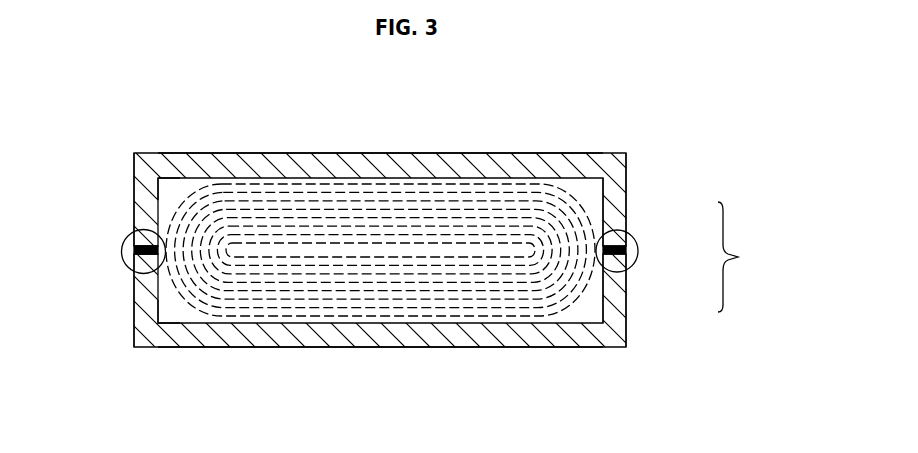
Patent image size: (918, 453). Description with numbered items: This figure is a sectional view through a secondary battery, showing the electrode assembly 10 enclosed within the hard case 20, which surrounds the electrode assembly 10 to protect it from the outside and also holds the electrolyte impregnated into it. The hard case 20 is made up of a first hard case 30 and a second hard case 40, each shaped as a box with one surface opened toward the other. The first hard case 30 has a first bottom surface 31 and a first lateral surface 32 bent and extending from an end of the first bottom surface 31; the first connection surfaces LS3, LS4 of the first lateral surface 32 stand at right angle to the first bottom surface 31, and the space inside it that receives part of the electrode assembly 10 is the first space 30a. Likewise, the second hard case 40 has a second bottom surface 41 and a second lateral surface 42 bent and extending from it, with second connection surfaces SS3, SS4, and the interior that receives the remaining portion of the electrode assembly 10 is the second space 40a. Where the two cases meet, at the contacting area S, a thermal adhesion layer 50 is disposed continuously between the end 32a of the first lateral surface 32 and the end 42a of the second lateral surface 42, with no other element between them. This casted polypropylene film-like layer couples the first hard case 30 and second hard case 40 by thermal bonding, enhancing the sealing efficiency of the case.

The electrode assembly 10 is at (327, 190).
The hard case 20 is at (742, 257).
The first hard case 30 is at (643, 304).
The first space 30a is at (182, 312).
The first bottom surface 31 is at (293, 338).
The first lateral surface 32 is at (612, 322).
The end of the first lateral surface 32a is at (135, 263).
The second hard case 40 is at (643, 208).
The second space 40a is at (182, 188).
The second bottom surface 41 is at (442, 162).
The second lateral surface 42 is at (613, 192).
The end of the second lateral surface 42a is at (137, 248).
The thermal adhesion layer 50 is at (623, 250).
The contacting area S is at (131, 258).
The second connection surface SS3 is at (626, 173).
The second connection surface SS4 is at (134, 183).
The first connection surface LS3 is at (626, 318).
The first connection surface LS4 is at (134, 313).